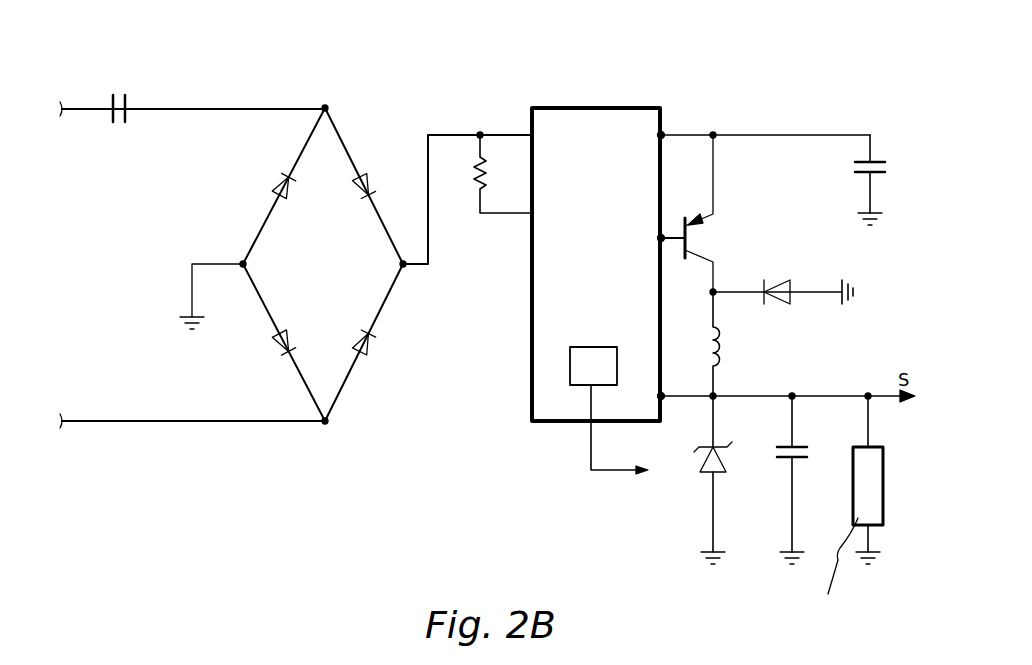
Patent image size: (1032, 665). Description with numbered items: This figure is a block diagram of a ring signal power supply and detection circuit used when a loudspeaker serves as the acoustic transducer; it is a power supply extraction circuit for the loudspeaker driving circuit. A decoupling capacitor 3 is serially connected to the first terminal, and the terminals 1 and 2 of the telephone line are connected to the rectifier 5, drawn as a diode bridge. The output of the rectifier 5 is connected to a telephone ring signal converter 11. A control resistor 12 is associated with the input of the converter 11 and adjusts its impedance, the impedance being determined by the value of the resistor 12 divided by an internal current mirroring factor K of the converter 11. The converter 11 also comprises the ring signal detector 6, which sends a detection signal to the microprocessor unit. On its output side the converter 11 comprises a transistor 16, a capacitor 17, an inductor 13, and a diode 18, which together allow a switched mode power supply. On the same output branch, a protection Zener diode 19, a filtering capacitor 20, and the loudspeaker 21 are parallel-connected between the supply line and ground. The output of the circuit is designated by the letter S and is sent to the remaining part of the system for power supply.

The first terminal 1 is at (80, 109).
The second terminal 2 is at (117, 421).
The decoupling capacitor 3 is at (121, 123).
The rectifier 5 is at (356, 135).
The ring signal detector 6 is at (590, 356).
The telephone ring signal converter 11 is at (555, 117).
The control resistor 12 is at (475, 175).
The inductor 13 is at (718, 358).
The transistor 16 is at (702, 230).
The capacitor 17 is at (854, 165).
The diode 18 is at (778, 305).
The protection Zener diode 19 is at (705, 473).
The filtering capacitor 20 is at (796, 462).
The loudspeaker 21 is at (873, 500).